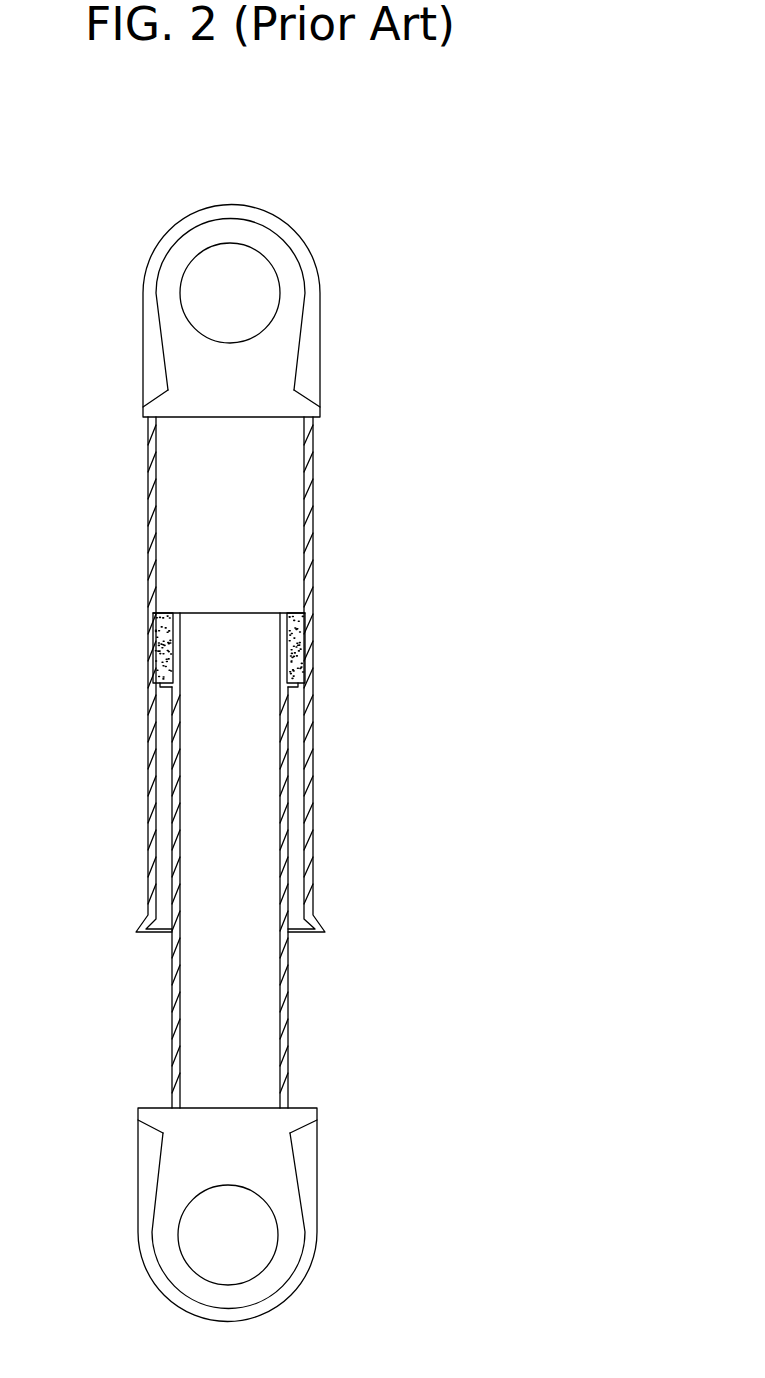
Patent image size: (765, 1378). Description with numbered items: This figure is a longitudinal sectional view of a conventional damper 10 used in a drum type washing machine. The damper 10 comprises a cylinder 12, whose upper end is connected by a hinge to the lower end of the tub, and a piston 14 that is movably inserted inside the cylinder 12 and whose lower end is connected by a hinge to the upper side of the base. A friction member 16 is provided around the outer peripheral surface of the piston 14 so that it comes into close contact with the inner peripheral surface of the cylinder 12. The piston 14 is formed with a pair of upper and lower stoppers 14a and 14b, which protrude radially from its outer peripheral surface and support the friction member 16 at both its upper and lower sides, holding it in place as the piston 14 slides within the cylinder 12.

The damper 10 is at (370, 330).
The cylinder 12 is at (148, 572).
The piston 14 is at (172, 1012).
The upper stopper 14a is at (305, 613).
The lower stopper 14b is at (305, 685).
The friction member 16 is at (155, 657).